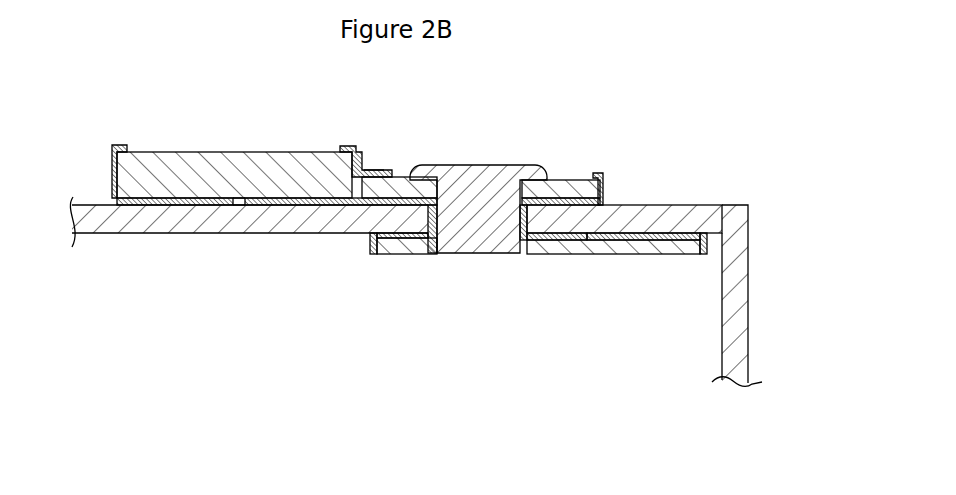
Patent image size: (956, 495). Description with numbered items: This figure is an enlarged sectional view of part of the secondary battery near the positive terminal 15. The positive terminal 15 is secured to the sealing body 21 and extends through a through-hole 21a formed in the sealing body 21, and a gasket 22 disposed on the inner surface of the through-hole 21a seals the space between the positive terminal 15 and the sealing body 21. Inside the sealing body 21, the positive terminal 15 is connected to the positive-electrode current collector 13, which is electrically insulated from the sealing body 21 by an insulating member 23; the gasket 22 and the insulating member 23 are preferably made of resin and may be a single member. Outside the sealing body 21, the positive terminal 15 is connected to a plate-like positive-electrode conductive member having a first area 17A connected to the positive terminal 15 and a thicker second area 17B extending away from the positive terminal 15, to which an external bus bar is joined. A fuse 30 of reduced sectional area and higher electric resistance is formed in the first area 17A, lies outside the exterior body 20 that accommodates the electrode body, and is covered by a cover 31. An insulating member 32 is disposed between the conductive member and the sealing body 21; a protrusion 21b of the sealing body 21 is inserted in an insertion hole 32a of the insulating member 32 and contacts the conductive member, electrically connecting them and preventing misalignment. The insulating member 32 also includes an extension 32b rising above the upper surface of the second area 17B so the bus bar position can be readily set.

The positive-electrode current collector 13 is at (665, 240).
The positive terminal 15 is at (473, 165).
The first area 17A is at (565, 180).
The second area 17B is at (275, 150).
The exterior body 20 is at (748, 282).
The sealing body 21 is at (662, 205).
The through-hole 21a is at (442, 222).
The protrusion 21b is at (230, 198).
The gasket 22 is at (572, 240).
The insulating member 23 is at (621, 248).
The fuse 30 is at (373, 162).
The cover 31 is at (383, 168).
The insulating member 32 is at (318, 207).
The insertion hole 32a is at (216, 210).
The extension 32b is at (117, 145).